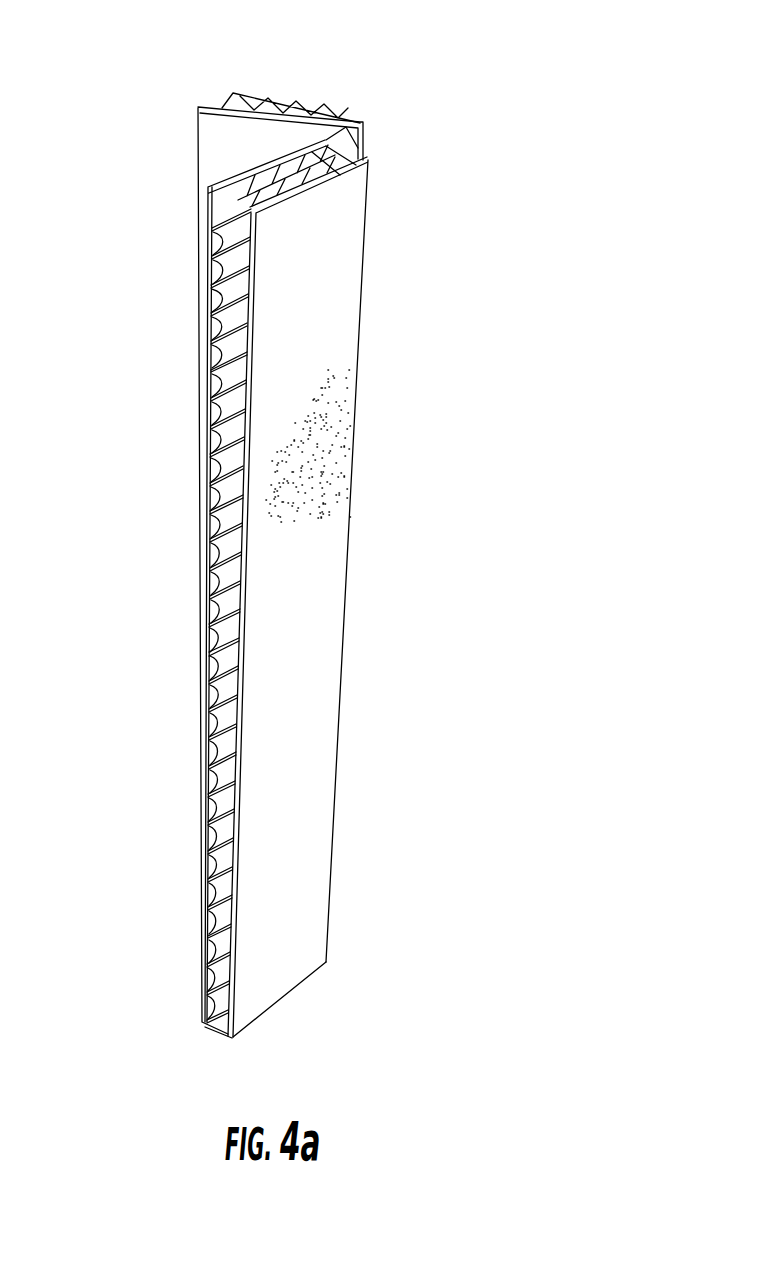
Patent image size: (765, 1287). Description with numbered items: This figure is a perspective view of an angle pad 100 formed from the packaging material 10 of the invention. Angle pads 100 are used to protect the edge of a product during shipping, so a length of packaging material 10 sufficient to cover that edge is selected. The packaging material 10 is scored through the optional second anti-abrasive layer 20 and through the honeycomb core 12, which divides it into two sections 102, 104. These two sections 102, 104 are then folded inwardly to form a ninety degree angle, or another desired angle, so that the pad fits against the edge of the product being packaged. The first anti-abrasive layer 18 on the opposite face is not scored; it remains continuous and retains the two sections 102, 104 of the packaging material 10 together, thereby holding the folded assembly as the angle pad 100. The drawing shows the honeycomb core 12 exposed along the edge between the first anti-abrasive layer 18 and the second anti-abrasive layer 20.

The sandwich panel assembly 100 is at (319, 523).
The top edge of core 102 is at (314, 110).
The front face sheet 104 is at (314, 256).
The back face sheet 18 is at (206, 173).
The honeycomb core 12 is at (220, 548).
The composite panel 10 is at (302, 753).
The outer surface of face sheet 20 is at (285, 905).